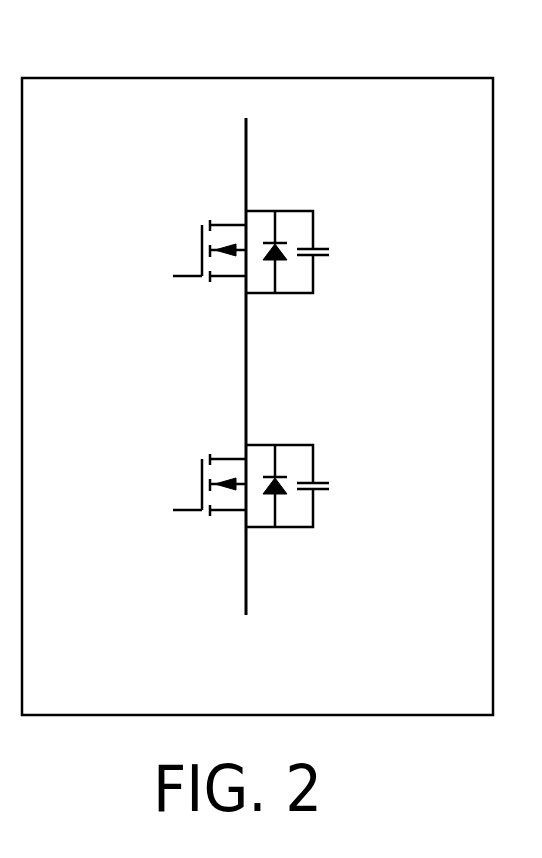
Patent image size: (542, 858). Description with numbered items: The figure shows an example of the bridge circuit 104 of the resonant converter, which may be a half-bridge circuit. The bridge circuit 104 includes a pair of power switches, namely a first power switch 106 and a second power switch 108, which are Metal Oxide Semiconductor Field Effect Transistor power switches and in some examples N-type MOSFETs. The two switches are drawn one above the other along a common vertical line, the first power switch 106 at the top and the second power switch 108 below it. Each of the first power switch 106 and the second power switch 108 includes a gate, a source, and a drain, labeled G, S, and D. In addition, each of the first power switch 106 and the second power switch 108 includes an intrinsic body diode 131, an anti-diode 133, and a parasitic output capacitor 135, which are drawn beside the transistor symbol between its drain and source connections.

The bridge circuit 104 is at (462, 78).
The first power switch 106 is at (202, 237).
The second power switch 108 is at (202, 477).
The intrinsic body diode 131 is at (222, 246).
The anti-diode 133 is at (278, 243).
The parasitic output capacitor 135 is at (314, 248).